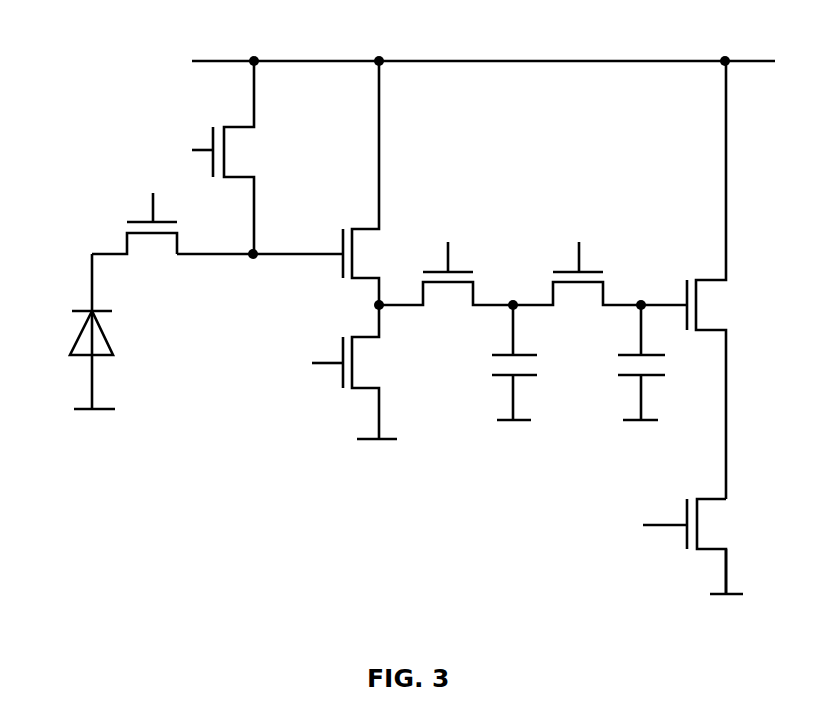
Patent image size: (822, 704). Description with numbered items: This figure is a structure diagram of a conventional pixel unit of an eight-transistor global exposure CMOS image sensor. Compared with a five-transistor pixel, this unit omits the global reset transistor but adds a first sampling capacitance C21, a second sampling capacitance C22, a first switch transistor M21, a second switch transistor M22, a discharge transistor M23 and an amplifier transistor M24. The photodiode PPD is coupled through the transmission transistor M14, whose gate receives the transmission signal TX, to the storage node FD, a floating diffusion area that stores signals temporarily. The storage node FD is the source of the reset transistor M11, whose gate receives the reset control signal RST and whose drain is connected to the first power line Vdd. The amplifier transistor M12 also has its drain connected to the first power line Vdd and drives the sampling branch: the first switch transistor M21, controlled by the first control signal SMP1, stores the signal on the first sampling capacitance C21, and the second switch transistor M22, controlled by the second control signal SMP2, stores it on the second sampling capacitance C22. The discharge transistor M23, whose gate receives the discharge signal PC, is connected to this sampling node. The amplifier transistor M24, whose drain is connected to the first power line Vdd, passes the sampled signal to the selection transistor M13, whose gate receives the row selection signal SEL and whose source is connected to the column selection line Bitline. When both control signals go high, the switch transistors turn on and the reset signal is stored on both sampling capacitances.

The reset transistor M11 is at (258, 157).
The amplifier transistor M12 is at (344, 183).
The selection transistor M13 is at (730, 546).
The transmission transistor M14 is at (134, 253).
The first switch transistor M21 is at (446, 308).
The second switch transistor M22 is at (577, 308).
The discharge transistor M23 is at (382, 389).
The amplifier transistor M24 is at (709, 280).
The first sampling capacitance C21 is at (494, 378).
The second sampling capacitance C22 is at (622, 378).
The photodiode PPD is at (67, 350).
The storage node FD is at (260, 272).
The reset control signal RST is at (176, 150).
The transmission signal TX is at (150, 196).
The discharge signal PC is at (306, 363).
The first control signal SMP1 is at (444, 247).
The second control signal SMP2 is at (576, 247).
The row selection signal SEL is at (643, 525).
The first power line Vdd is at (483, 43).
The column selection line Bitline is at (730, 591).